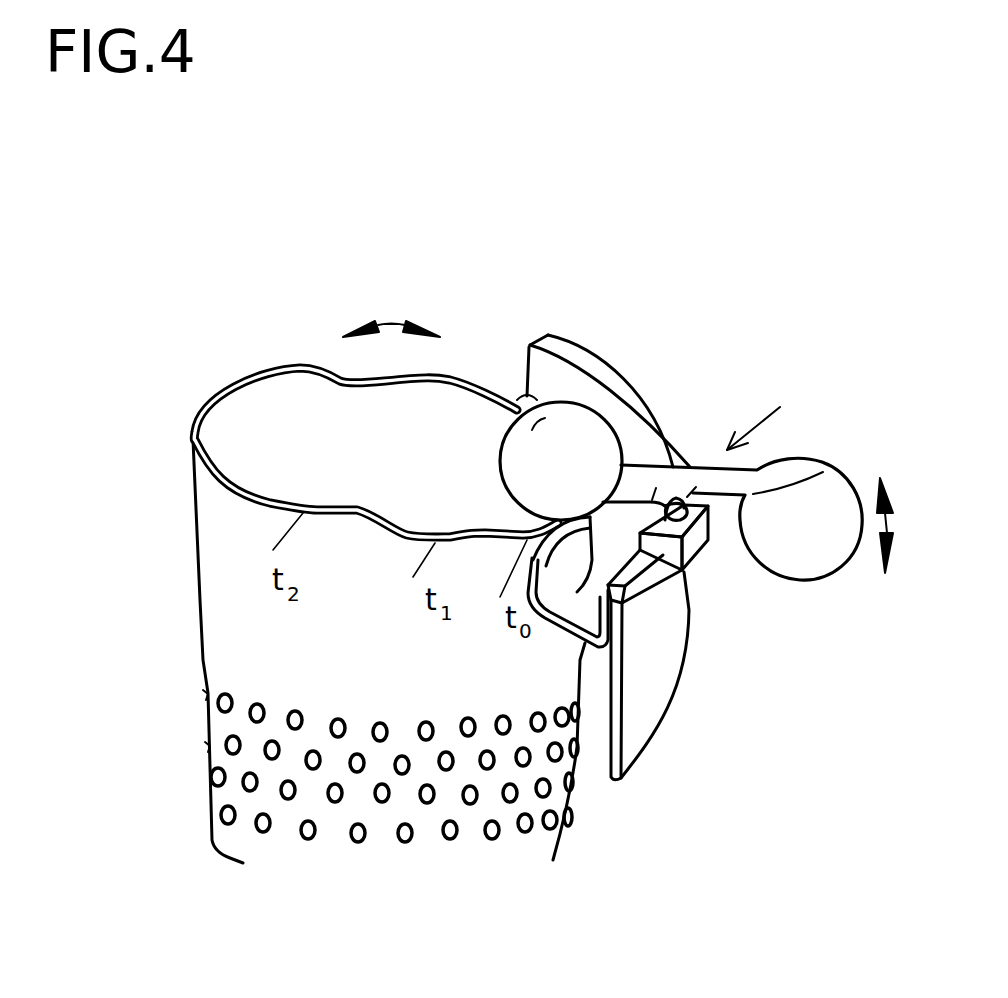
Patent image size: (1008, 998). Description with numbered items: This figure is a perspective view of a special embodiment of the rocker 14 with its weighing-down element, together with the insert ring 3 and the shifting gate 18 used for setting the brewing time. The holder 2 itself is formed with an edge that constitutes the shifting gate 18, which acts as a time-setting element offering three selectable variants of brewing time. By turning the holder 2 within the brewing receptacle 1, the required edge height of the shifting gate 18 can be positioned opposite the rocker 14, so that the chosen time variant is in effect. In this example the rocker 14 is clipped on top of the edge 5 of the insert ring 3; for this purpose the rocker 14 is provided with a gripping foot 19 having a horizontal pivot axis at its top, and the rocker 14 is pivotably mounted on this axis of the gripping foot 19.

The brewing receptacle 1 is at (665, 682).
The holder 2 is at (237, 638).
The insert ring 3 is at (623, 418).
The edge 5 is at (668, 435).
The rocker 14 is at (732, 475).
The shifting gate 18 is at (250, 373).
The gripping foot 19 is at (690, 540).